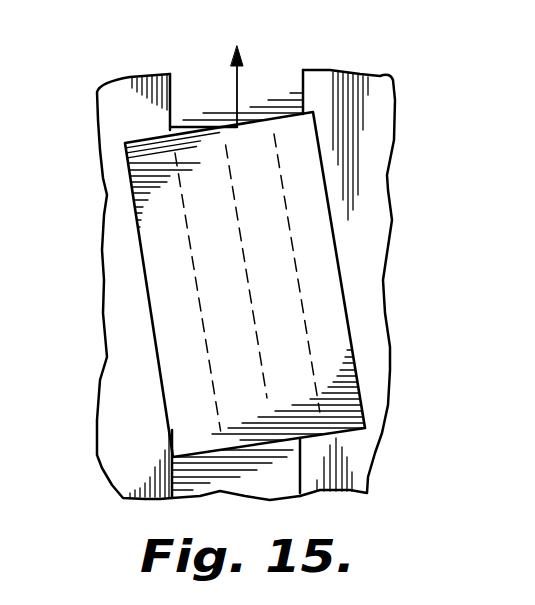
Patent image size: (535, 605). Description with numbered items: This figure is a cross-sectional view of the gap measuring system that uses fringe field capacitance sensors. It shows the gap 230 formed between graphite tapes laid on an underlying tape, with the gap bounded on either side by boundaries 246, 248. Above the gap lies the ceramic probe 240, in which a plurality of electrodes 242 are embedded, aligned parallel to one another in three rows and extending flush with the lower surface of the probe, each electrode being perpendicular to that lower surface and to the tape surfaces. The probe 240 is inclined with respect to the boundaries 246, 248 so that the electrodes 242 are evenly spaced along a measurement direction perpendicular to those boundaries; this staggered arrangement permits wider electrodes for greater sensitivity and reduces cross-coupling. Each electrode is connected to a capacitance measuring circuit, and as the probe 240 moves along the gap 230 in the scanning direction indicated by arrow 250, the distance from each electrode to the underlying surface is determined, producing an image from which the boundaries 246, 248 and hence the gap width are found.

The gap 230 is at (192, 92).
The ceramic probe 240 is at (337, 231).
The electrodes 242 is at (320, 401).
The boundary of gap 246 is at (170, 107).
The boundary of gap 248 is at (300, 82).
The arrow 250 is at (238, 80).